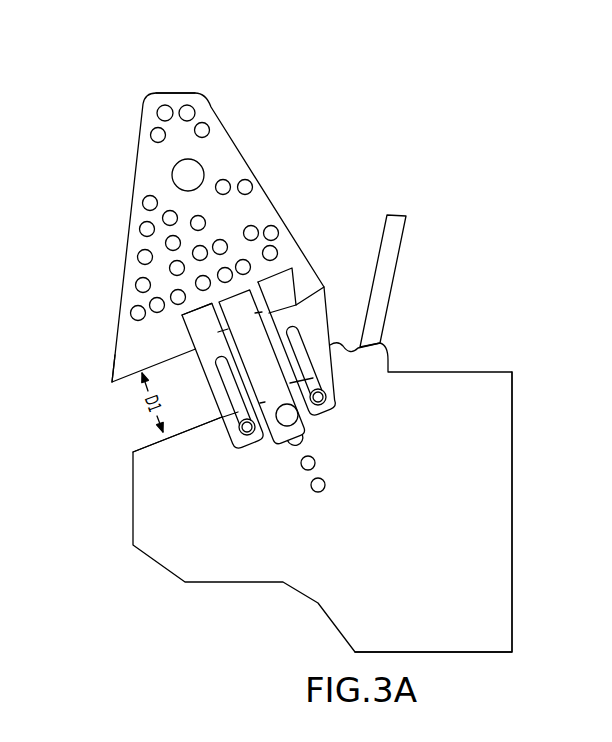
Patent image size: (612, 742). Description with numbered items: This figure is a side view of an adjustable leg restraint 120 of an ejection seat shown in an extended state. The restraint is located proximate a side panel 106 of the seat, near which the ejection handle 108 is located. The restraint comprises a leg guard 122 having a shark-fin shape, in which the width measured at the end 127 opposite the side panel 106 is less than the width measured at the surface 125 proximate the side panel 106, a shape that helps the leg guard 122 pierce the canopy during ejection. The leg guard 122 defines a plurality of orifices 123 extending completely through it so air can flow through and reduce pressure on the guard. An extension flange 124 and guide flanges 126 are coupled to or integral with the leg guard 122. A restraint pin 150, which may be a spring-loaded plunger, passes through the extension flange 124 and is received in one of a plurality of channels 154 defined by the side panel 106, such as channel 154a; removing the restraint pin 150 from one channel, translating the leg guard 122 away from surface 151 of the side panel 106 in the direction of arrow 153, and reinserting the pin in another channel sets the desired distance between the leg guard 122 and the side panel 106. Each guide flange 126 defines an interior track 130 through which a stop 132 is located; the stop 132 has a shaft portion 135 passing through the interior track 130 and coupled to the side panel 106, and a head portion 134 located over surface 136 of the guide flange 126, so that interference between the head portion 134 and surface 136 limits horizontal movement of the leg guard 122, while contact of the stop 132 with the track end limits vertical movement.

The side panel 106 is at (322, 497).
The ejection handle 108 is at (400, 222).
The adjustable leg restraint 120 is at (184, 233).
The leg guard 122 is at (212, 233).
The orifices 123 is at (205, 128).
The extension flange 124 is at (261, 386).
The surface of leg guard 125 is at (116, 388).
The guide flange 126 is at (273, 385).
The end of leg guard 127 is at (185, 92).
The interior track 130 is at (295, 404).
The stop 132 is at (241, 437).
The head portion 134 is at (321, 390).
The shaft portion 135 is at (336, 394).
The surface of guide flange 136 is at (199, 346).
The restraint pin 150 is at (283, 421).
The surface of side panel 151 is at (188, 431).
The arrow 153 is at (343, 519).
The channels 154 is at (315, 453).
The first channel 154a is at (328, 485).